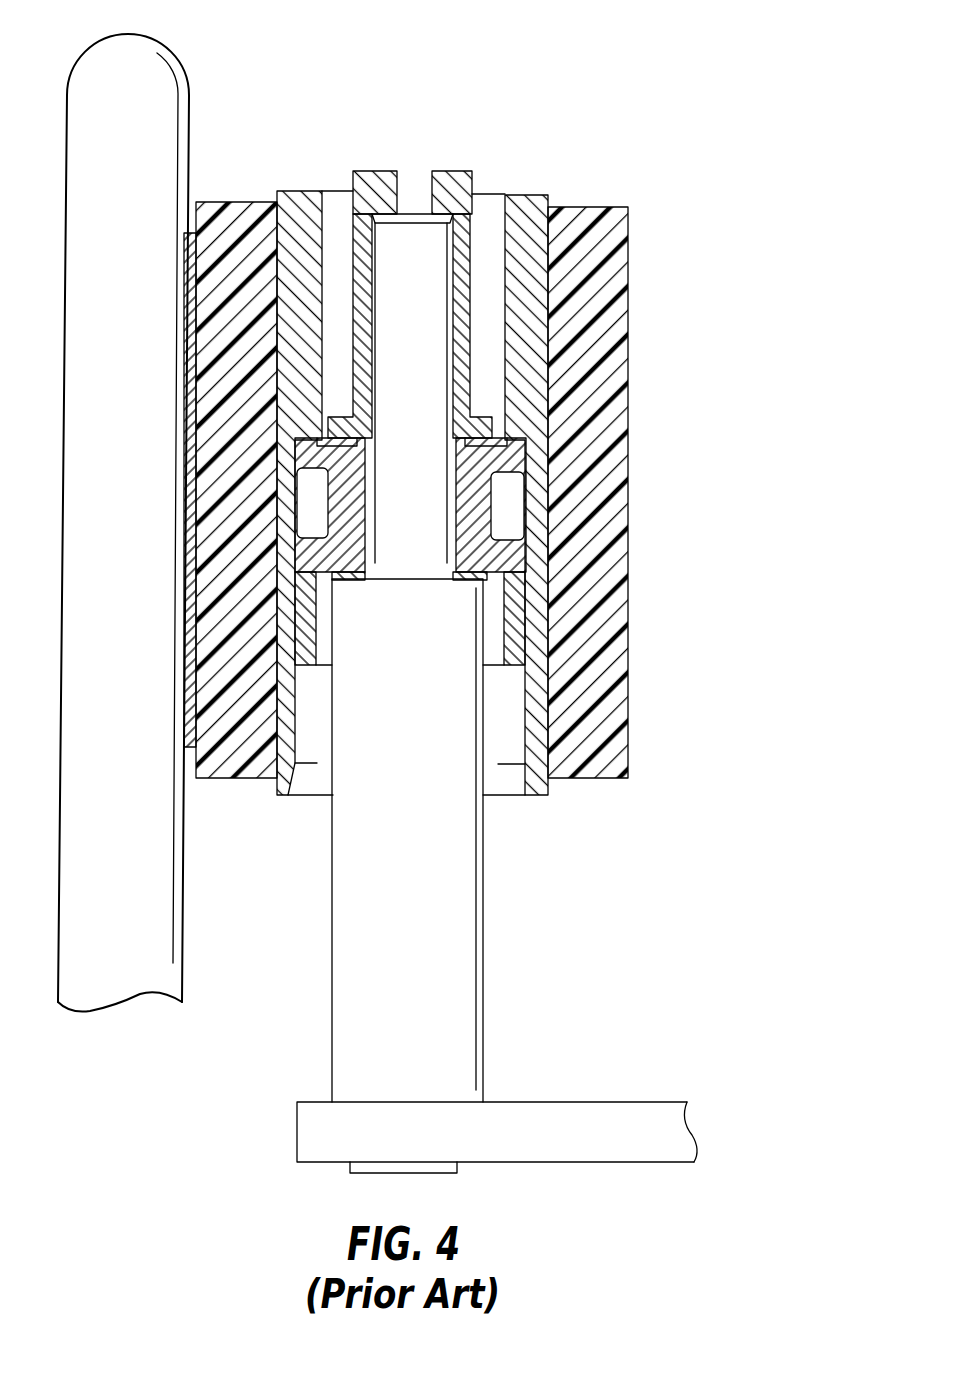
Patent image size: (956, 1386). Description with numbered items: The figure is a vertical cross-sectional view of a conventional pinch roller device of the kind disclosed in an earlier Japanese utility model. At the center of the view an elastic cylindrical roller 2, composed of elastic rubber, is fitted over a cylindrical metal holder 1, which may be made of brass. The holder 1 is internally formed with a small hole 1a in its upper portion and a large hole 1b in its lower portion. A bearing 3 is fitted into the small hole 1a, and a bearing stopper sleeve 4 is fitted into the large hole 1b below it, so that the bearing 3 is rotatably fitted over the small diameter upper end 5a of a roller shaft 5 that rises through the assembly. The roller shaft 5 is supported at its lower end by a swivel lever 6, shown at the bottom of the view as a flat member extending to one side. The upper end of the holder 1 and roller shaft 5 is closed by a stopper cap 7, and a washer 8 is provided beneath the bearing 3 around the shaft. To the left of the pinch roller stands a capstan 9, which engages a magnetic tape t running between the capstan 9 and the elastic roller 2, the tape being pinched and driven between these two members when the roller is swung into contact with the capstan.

The holder 1 is at (434, 489).
The small hole 1a is at (488, 203).
The large hole 1b is at (507, 764).
The elastic cylindrical roller 2 is at (593, 210).
The bearing 3 is at (462, 507).
The bearing stopper sleeve 4 is at (515, 648).
The roller shaft 5 is at (450, 987).
The small diameter upper end 5a is at (428, 421).
The swivel lever 6 is at (560, 1117).
The stopper cap 7 is at (450, 178).
The washer 8 is at (349, 576).
The capstan 9 is at (128, 45).
The magnetic tape t is at (188, 498).